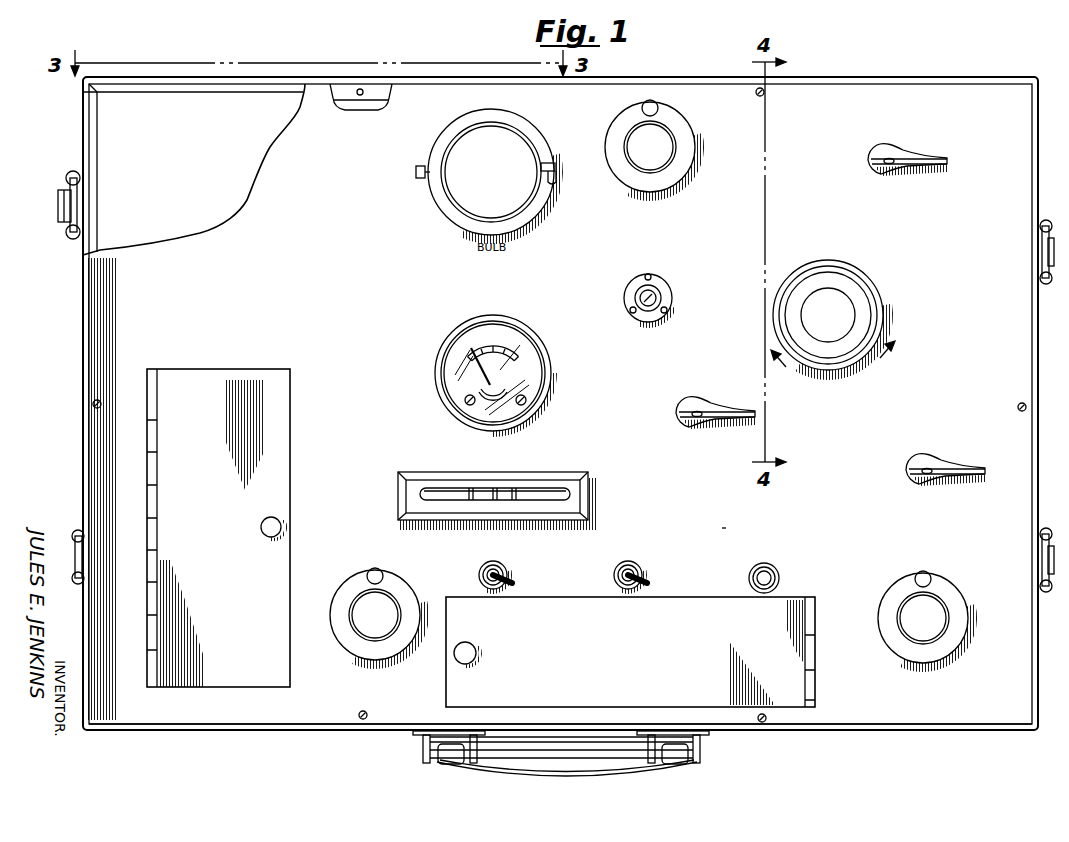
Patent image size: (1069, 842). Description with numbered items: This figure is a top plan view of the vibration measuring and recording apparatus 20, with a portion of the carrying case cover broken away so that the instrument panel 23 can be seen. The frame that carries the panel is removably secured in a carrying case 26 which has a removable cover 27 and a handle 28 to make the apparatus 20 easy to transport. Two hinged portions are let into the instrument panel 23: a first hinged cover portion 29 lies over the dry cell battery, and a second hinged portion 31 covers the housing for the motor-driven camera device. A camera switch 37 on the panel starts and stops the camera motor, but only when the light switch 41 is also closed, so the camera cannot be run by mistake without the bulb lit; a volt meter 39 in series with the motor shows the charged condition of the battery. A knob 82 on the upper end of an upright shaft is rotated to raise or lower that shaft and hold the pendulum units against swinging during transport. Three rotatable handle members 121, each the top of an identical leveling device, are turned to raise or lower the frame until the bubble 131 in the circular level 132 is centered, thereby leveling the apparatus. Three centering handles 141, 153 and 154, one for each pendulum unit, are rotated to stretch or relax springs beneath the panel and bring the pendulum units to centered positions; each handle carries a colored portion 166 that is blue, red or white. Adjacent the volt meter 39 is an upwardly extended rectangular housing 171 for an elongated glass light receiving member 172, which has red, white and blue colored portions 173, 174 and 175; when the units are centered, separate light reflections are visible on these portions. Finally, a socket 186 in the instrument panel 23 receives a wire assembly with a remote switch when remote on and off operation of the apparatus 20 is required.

The vibration measuring and recording apparatus 20 is at (72, 332).
The instrument panel 23 is at (215, 718).
The carrying case 26 is at (83, 291).
The removable cover 27 is at (103, 150).
The handle 28 is at (670, 770).
The first hinged cover portion 29 is at (777, 606).
The second hinged portion 31 is at (288, 453).
The switch 37 is at (641, 568).
The volt meter 39 is at (549, 363).
The switch 41 is at (506, 568).
The knob 82 is at (870, 299).
The rotatable handle member 121 is at (668, 131).
The bubble 131 is at (655, 295).
The circular level 132 is at (672, 292).
The handle 141 is at (936, 455).
The handle 153 is at (700, 398).
The handle 154 is at (889, 147).
The colored portion 166 is at (886, 157).
The rectangular housing 171 is at (588, 477).
The light receiving member 172 is at (554, 490).
The red colored portion 173 is at (470, 490).
The white colored portion 174 is at (497, 490).
The blue colored portion 175 is at (516, 490).
The socket 186 is at (777, 571).